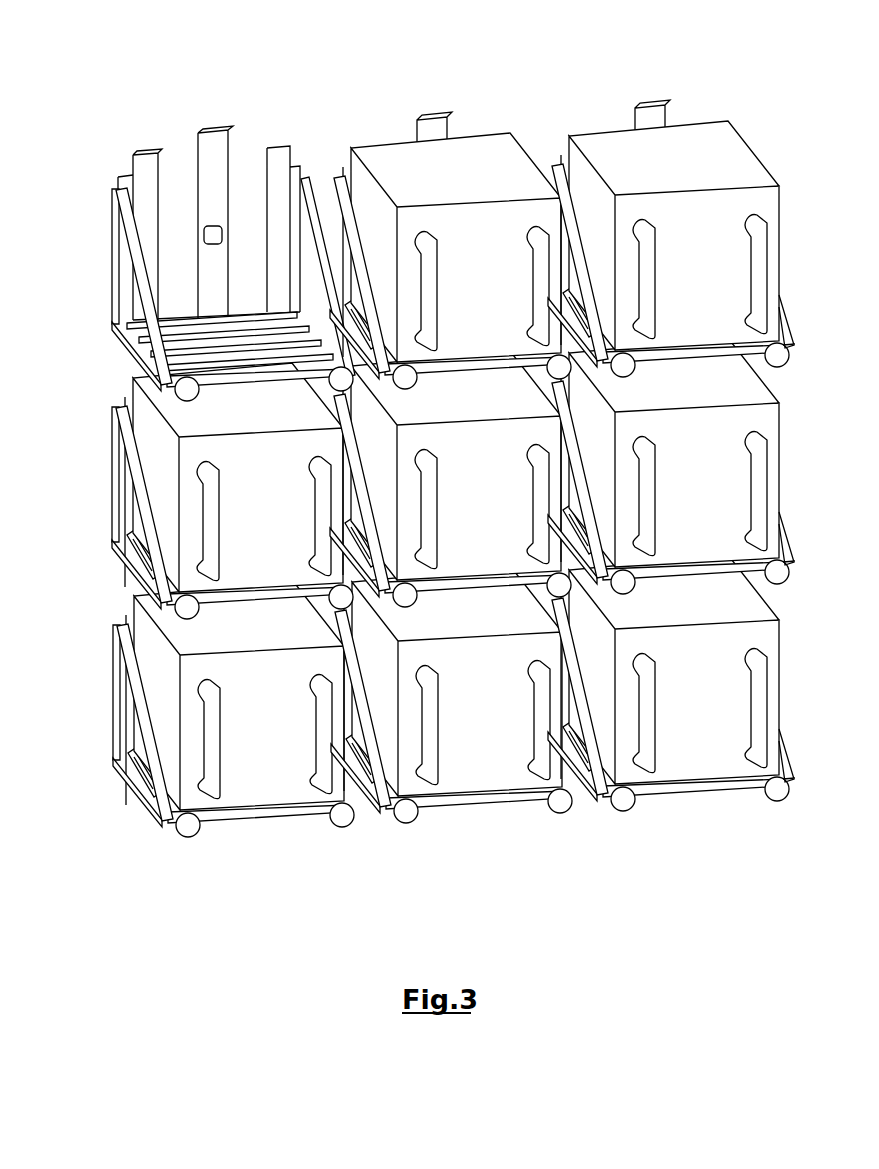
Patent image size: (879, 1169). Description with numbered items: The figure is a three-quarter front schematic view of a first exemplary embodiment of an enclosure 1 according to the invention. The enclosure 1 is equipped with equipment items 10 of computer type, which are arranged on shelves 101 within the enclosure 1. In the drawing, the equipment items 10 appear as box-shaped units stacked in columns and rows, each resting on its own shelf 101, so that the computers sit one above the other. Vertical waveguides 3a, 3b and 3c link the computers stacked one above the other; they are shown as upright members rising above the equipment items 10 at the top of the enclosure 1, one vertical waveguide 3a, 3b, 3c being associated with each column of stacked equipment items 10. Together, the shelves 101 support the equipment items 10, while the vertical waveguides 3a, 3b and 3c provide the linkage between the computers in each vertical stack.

The enclosure 1 is at (517, 850).
The vertical waveguide 3a is at (213, 160).
The vertical waveguide 3b is at (430, 134).
The vertical waveguide 3c is at (648, 118).
The equipment item 10 is at (732, 147).
The shelf 101 is at (188, 221).